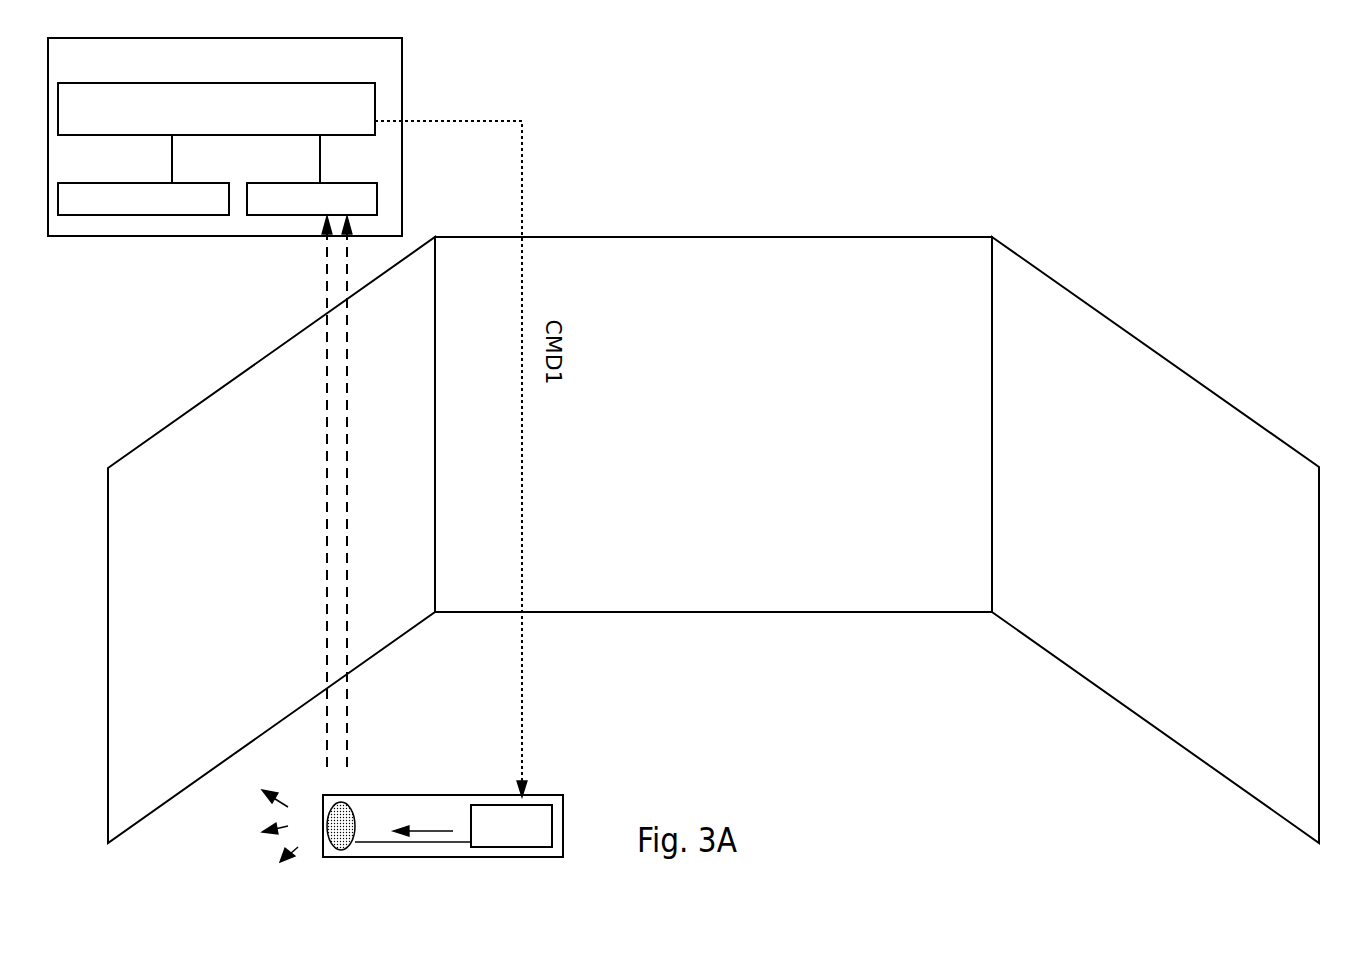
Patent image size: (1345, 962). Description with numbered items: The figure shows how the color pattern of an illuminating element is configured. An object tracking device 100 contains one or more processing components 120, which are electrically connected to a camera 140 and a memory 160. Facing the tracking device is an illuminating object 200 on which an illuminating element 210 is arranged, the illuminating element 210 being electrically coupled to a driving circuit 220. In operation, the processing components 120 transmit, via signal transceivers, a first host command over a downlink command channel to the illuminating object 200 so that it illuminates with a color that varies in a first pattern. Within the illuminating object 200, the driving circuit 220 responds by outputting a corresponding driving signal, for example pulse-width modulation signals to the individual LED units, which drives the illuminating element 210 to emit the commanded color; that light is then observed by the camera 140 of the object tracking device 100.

The object tracking device 100 is at (350, 75).
The processing components 120 is at (355, 121).
The memory 160 is at (203, 211).
The camera 140 is at (368, 211).
The illuminating object 200 is at (563, 826).
The illuminating element 210 is at (356, 822).
The driving circuit 220 is at (533, 840).